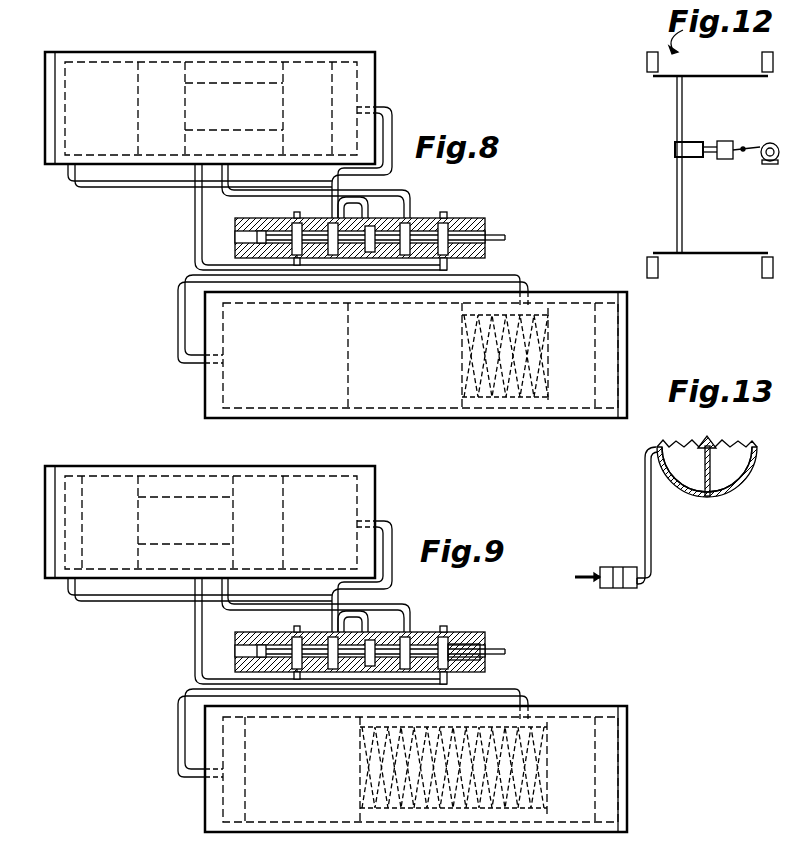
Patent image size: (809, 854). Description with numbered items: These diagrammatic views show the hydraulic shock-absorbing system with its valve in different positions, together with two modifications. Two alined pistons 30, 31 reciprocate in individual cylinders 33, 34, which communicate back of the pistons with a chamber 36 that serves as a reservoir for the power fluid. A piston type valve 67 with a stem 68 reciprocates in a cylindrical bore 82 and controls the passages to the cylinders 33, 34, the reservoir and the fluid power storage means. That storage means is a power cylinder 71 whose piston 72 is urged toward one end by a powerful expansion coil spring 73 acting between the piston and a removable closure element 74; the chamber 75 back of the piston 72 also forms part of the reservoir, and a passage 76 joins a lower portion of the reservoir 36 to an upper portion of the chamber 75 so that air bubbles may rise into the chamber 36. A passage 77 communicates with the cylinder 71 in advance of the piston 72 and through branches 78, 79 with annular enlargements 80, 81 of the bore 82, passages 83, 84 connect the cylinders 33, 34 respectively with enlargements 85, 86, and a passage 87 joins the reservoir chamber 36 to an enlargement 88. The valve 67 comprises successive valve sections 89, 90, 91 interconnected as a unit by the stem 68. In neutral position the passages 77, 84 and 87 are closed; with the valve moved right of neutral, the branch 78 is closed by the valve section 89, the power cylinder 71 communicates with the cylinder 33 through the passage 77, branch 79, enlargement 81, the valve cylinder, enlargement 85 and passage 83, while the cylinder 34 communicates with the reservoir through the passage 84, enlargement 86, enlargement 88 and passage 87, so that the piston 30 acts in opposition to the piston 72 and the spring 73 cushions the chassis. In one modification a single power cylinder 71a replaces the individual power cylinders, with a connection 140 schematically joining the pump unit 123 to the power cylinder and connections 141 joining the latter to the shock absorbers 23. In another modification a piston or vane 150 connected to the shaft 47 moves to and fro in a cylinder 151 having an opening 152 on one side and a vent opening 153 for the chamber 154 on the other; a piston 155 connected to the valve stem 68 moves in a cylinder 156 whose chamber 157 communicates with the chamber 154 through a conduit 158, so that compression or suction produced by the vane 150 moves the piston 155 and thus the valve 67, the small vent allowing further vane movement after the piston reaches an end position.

In FIG. 8, the piston 30 is at (135, 66).
In FIG. 9, the piston 30 is at (92, 506).
In FIG. 8, the chamber 36 is at (242, 66).
In FIG. 9, the chamber 36 is at (185, 506).
In FIG. 8, the piston 31 is at (330, 66).
In FIG. 9, the piston 31 is at (299, 506).
In FIG. 8, the cylinder 33 is at (68, 95).
In FIG. 9, the cylinder 33 is at (195, 522).
In FIG. 8, the cylinder 34 is at (356, 85).
In FIG. 9, the cylinder 34 is at (377, 499).
In FIG. 8, the passage 84 is at (391, 118).
In FIG. 9, the passage 84 is at (375, 572).
In FIG. 8, the passage 83 is at (112, 194).
In FIG. 9, the passage 83 is at (200, 603).
In FIG. 8, the passage 87 is at (230, 200).
In FIG. 9, the passage 87 is at (307, 607).
In FIG. 8, the passage 76 is at (195, 237).
In FIG. 9, the passage 76 is at (303, 631).
In FIG. 8, the passage 77 is at (178, 312).
In FIG. 9, the passage 77 is at (333, 733).
In FIG. 8, the chamber 75 is at (532, 302).
In FIG. 9, the chamber 75 is at (537, 700).
In FIG. 8, the valve section 90 is at (392, 209).
In FIG. 9, the valve section 90 is at (367, 621).
In FIG. 8, the piston type valve 67 is at (484, 220).
In FIG. 9, the piston type valve 67 is at (369, 636).
In FIG. 8, the cylindrical bore 82 is at (257, 237).
In FIG. 9, the cylindrical bore 82 is at (346, 655).
In FIG. 8, the stem 68 is at (504, 235).
In FIG. 9, the stem 68 is at (504, 658).
In FIG. 13, the stem 68 is at (584, 575).
In FIG. 8, the annular enlargement 80 is at (300, 218).
In FIG. 9, the annular enlargement 80 is at (285, 641).
In FIG. 8, the annular enlargement 86 is at (333, 258).
In FIG. 9, the annular enlargement 86 is at (335, 687).
In FIG. 8, the annular enlargement 88 is at (372, 258).
In FIG. 9, the annular enlargement 88 is at (352, 697).
In FIG. 8, the annular enlargement 85 is at (408, 220).
In FIG. 9, the annular enlargement 85 is at (418, 636).
In FIG. 8, the valve section 91 is at (485, 250).
In FIG. 9, the valve section 91 is at (462, 630).
In FIG. 8, the annular enlargement 81 is at (446, 220).
In FIG. 9, the annular enlargement 81 is at (451, 619).
In FIG. 8, the branch 79 is at (450, 268).
In FIG. 9, the branch 79 is at (467, 682).
In FIG. 8, the valve section 89 is at (296, 262).
In FIG. 9, the valve section 89 is at (277, 706).
In FIG. 8, the branch 78 is at (300, 266).
In FIG. 9, the branch 78 is at (297, 703).
In FIG. 8, the removable closure element 74 is at (624, 336).
In FIG. 9, the removable closure element 74 is at (428, 769).
In FIG. 8, the cylinder 71 is at (205, 388).
In FIG. 9, the cylinder 71 is at (393, 769).
In FIG. 8, the piston 72 is at (347, 410).
In FIG. 9, the piston 72 is at (237, 785).
In FIG. 8, the expansion coil spring 73 is at (502, 398).
In FIG. 9, the expansion coil spring 73 is at (453, 785).
In FIG. 12, the shock absorber 23 is at (647, 62).
In FIG. 12, the connection 141 is at (678, 112).
In FIG. 12, the single power cylinder 71a is at (690, 146).
In FIG. 12, the connection 140 is at (708, 158).
In FIG. 12, the motor 123 is at (725, 148).
In FIG. 13, the cylinder 151 is at (702, 498).
In FIG. 13, the chamber 154 is at (685, 476).
In FIG. 13, the vent opening 153 is at (692, 440).
In FIG. 13, the opening 152 is at (748, 447).
In FIG. 13, the shaft 47 is at (710, 438).
In FIG. 13, the piston or vane 150 is at (716, 482).
In FIG. 13, the conduit 158 is at (645, 489).
In FIG. 13, the piston 155 is at (618, 590).
In FIG. 13, the chamber 157 is at (630, 568).
In FIG. 13, the cylinder 156 is at (640, 587).